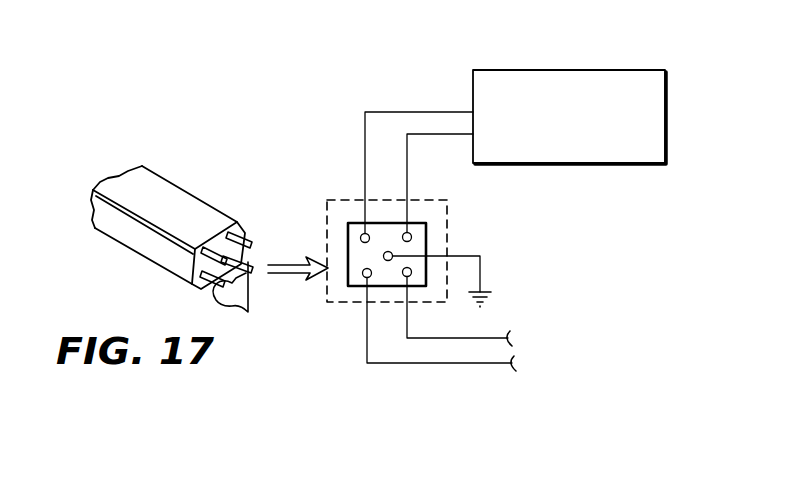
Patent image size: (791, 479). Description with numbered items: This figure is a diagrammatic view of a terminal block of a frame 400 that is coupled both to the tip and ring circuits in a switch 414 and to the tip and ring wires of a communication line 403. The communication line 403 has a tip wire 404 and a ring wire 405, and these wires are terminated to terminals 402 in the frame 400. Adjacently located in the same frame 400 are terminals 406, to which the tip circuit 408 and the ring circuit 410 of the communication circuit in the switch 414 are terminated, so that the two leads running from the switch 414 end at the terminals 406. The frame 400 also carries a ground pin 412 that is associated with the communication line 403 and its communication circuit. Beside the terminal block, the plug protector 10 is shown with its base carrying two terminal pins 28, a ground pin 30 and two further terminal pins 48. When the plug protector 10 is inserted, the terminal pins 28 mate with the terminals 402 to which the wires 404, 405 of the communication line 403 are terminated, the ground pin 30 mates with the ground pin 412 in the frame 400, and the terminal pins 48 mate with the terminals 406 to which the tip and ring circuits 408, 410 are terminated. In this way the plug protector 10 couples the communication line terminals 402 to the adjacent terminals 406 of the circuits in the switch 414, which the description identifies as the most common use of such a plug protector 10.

The plug protector 10 is at (205, 191).
The terminal pins 28 is at (242, 301).
The ground pin 30 is at (222, 262).
The terminal pins 48 is at (209, 249).
The frame 400 is at (450, 213).
The terminals 402 is at (361, 279).
The communication line 403 is at (516, 334).
The tip wire 404 is at (477, 365).
The ring wire 405 is at (492, 338).
The terminals 406 is at (404, 222).
The tip circuit 408 is at (472, 112).
The ring circuit 410 is at (473, 136).
The ground pin 412 is at (393, 255).
The switch 414 is at (643, 65).